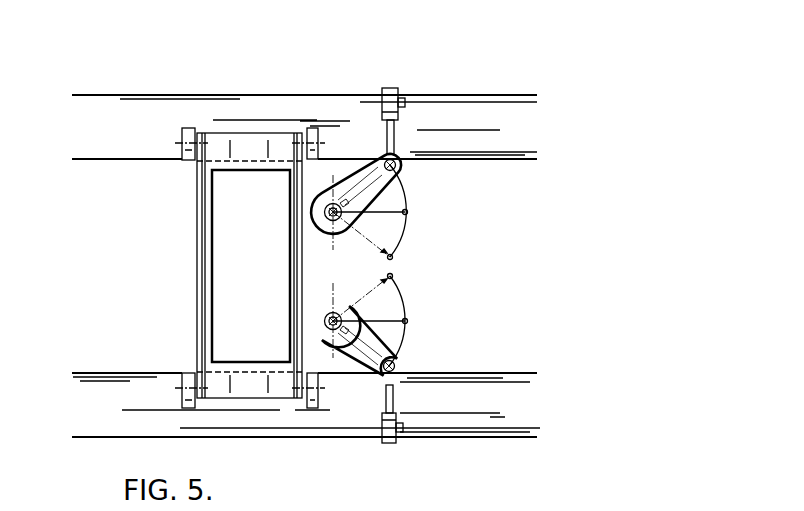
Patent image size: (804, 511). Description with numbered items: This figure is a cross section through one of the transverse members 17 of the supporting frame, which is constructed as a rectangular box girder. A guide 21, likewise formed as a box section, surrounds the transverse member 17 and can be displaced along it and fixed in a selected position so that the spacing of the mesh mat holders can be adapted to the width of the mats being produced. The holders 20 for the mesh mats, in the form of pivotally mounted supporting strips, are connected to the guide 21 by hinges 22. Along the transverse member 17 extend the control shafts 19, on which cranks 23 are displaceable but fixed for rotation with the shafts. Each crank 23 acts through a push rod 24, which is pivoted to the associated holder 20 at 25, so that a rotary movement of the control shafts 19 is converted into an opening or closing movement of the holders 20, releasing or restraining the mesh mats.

The transverse member 17 is at (205, 303).
The control shaft 19 is at (323, 228).
The holder 20 is at (478, 103).
The guide 21 is at (197, 243).
The hinge 22 is at (185, 135).
The crank 23 is at (405, 235).
The push rod 24 is at (393, 135).
The pivot of push rod on holder 25 is at (395, 92).